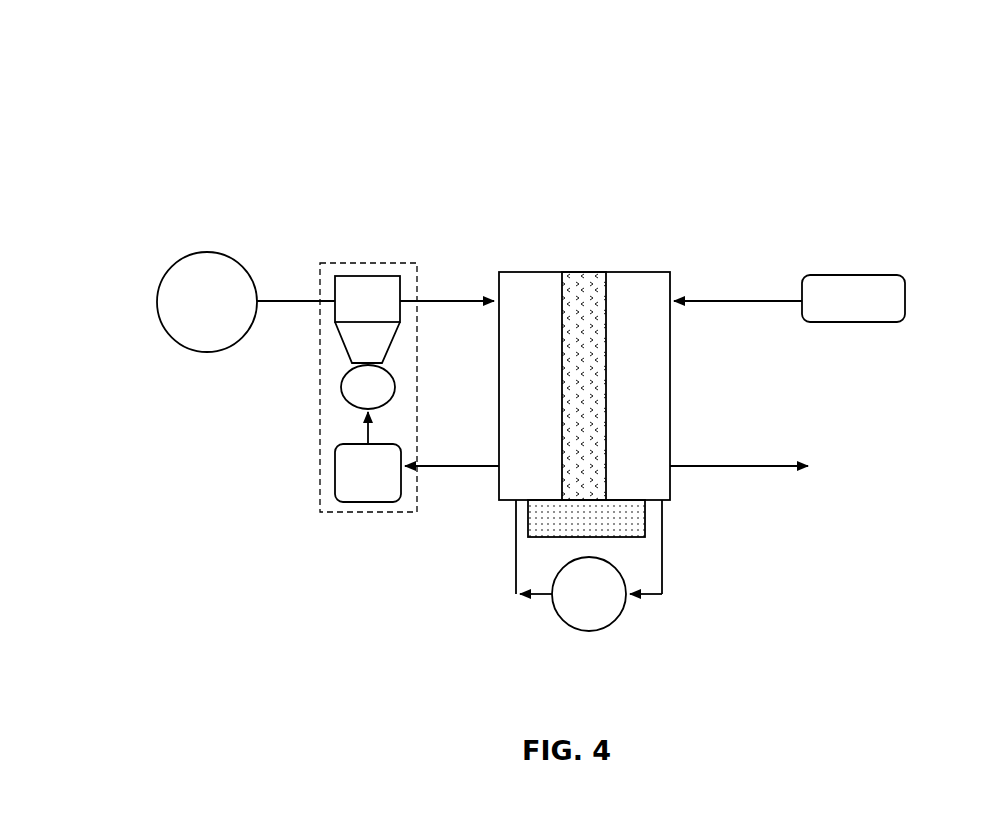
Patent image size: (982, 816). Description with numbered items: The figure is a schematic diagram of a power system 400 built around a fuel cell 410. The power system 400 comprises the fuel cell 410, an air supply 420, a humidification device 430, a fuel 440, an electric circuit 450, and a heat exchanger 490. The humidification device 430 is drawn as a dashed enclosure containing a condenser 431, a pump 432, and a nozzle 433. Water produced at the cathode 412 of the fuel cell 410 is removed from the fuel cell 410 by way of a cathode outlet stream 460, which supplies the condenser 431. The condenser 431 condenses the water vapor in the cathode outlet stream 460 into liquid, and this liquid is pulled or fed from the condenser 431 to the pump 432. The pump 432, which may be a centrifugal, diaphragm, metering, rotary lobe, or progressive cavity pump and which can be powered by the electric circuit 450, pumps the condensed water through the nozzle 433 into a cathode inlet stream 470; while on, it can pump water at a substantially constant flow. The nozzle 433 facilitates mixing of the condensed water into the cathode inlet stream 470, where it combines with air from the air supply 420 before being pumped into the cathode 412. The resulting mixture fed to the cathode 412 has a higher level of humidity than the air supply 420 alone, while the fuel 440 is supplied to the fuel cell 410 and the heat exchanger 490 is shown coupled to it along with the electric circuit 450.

The power system 400 is at (170, 108).
The fuel cell 410 is at (573, 250).
The cathode 412 is at (533, 268).
The air supply 420 is at (207, 246).
The humidification device 430 is at (344, 258).
The condenser 431 is at (344, 506).
The pump 432 is at (332, 395).
The nozzle 433 is at (332, 338).
The fuel 440 is at (850, 268).
The electric circuit 450 is at (649, 618).
The cathode outlet stream 460 is at (487, 474).
The cathode inlet stream 470 is at (456, 294).
The heat exchanger 490 is at (649, 527).